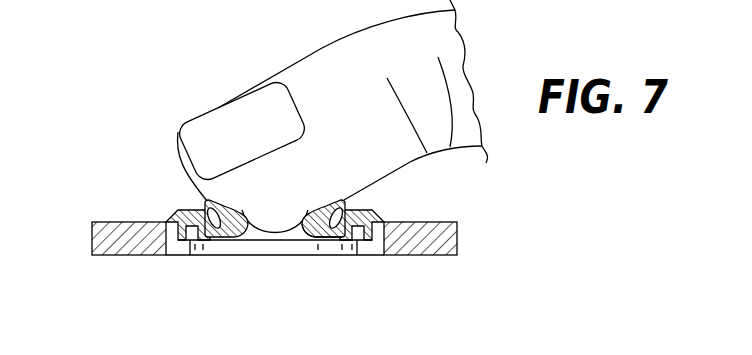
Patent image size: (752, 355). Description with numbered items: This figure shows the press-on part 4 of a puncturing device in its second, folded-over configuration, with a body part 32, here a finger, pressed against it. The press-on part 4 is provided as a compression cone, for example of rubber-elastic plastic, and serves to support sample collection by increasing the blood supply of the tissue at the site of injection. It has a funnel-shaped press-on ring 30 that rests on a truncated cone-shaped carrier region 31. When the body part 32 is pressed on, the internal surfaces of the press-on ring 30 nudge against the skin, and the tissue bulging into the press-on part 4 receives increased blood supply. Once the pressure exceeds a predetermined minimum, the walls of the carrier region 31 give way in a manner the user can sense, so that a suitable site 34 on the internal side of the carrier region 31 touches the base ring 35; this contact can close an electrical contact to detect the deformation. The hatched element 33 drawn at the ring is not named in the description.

The press-on part 4 is at (175, 207).
The press-on ring 30 is at (344, 204).
The carrier region 31 is at (316, 230).
The body part 32 is at (260, 86).
The protrusion 33 is at (320, 202).
The site 34 is at (218, 244).
The base ring 35 is at (248, 248).